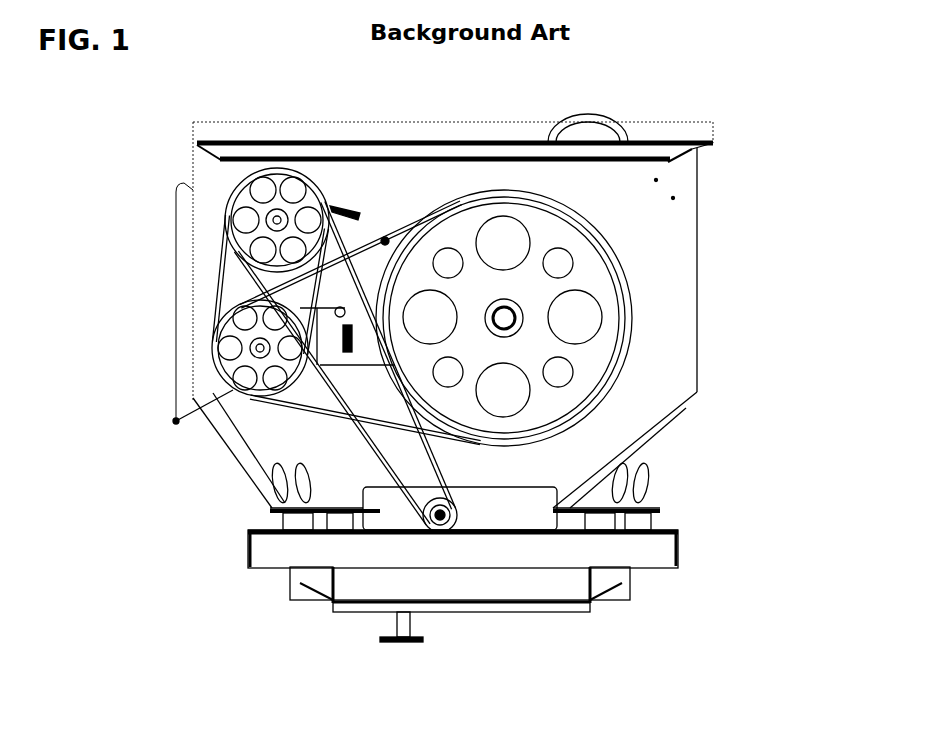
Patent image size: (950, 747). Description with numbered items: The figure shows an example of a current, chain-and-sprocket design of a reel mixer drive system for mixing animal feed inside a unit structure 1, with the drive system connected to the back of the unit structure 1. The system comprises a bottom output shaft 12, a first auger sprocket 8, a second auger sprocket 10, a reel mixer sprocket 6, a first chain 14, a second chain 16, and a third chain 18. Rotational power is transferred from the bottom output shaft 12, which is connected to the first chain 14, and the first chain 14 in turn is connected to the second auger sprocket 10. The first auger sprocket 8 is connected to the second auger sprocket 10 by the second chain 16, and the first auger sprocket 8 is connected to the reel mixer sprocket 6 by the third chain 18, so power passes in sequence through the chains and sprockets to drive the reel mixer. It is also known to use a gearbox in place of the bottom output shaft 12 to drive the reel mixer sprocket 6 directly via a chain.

The unit structure 1 is at (728, 68).
The reel mixer sprocket 6 is at (592, 271).
The first auger sprocket 8 is at (227, 348).
The second auger sprocket 10 is at (283, 175).
The bottom output shaft 12 is at (440, 533).
The first chain 14 is at (370, 440).
The second chain 16 is at (227, 275).
The third chain 18 is at (388, 237).